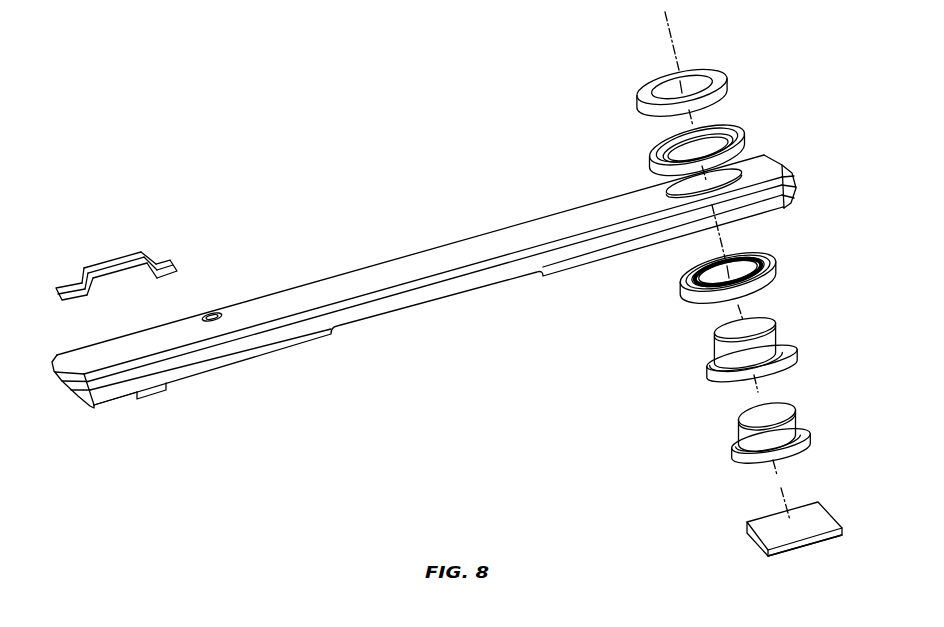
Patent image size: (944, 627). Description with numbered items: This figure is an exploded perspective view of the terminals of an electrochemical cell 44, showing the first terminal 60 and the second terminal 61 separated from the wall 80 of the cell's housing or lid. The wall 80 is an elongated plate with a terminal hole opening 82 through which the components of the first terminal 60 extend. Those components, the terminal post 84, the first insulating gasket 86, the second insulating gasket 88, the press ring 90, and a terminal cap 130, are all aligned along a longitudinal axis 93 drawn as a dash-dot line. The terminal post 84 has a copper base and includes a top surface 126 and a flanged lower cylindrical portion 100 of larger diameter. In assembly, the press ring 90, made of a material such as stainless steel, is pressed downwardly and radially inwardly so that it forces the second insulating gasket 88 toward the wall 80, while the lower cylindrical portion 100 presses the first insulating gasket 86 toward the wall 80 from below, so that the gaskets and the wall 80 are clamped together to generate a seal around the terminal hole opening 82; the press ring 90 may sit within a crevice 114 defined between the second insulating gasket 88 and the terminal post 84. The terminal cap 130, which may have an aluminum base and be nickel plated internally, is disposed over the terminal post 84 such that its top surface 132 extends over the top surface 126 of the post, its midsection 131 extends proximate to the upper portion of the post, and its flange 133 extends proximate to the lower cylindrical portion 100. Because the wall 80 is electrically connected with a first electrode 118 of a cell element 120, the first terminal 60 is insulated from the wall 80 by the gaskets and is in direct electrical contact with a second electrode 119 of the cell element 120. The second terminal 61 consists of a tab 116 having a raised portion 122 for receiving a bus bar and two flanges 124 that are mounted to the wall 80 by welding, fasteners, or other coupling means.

The electrochemical cell 44 is at (352, 185).
The first terminal 60 is at (712, 50).
The second terminal 61 is at (98, 238).
The wall 80 is at (455, 250).
The terminal hole opening 82 is at (740, 173).
The terminal post 84 is at (794, 418).
The first insulating gasket 86 is at (683, 291).
The second insulating gasket 88 is at (650, 158).
The press ring 90 is at (642, 86).
The longitudinal axis 93 is at (672, 45).
The lower cylindrical portion 100 is at (725, 462).
The crevice 114 is at (653, 142).
The tab 116 is at (123, 256).
The first electrode 118 is at (142, 390).
The second electrode 119 is at (803, 543).
The cell element 120 is at (131, 407).
The raised portion 122 is at (108, 258).
The flanges 124 is at (68, 286).
The top surface 126 is at (758, 413).
The terminal cap 130 is at (788, 320).
The midsection 131 is at (712, 350).
The top surface 132 is at (751, 325).
The flange 133 is at (714, 364).